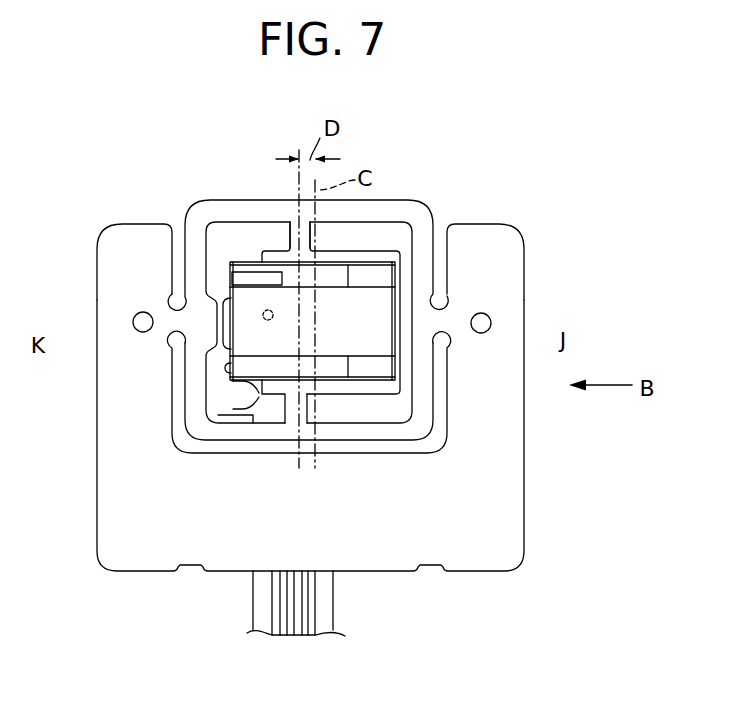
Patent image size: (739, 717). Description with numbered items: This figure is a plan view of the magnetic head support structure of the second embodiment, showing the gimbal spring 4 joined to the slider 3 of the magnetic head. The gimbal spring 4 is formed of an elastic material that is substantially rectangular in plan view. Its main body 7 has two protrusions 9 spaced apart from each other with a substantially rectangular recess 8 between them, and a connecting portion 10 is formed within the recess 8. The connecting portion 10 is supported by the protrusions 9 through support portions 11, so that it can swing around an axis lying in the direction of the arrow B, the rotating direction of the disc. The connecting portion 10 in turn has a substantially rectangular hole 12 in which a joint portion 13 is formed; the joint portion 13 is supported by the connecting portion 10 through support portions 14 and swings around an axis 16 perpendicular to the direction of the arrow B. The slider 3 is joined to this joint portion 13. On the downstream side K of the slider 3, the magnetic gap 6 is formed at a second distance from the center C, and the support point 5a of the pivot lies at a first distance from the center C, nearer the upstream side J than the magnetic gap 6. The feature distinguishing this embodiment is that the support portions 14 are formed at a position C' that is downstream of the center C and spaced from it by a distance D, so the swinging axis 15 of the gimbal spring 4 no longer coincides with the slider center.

The slider 3 is at (335, 323).
The gimbal spring 4 is at (316, 425).
The support point 5a is at (268, 320).
The magnetic gap 6 is at (246, 287).
The main body 7 is at (512, 487).
The recess 8 is at (440, 261).
The protrusions 9 is at (107, 251).
The connecting portion 10 is at (405, 215).
The support portions 11 is at (174, 323).
The hole 12 is at (227, 237).
The joint portion 13 is at (367, 251).
The support portions 14 is at (287, 240).
The swinging axis 15 is at (300, 447).
The axis 16 is at (297, 190).